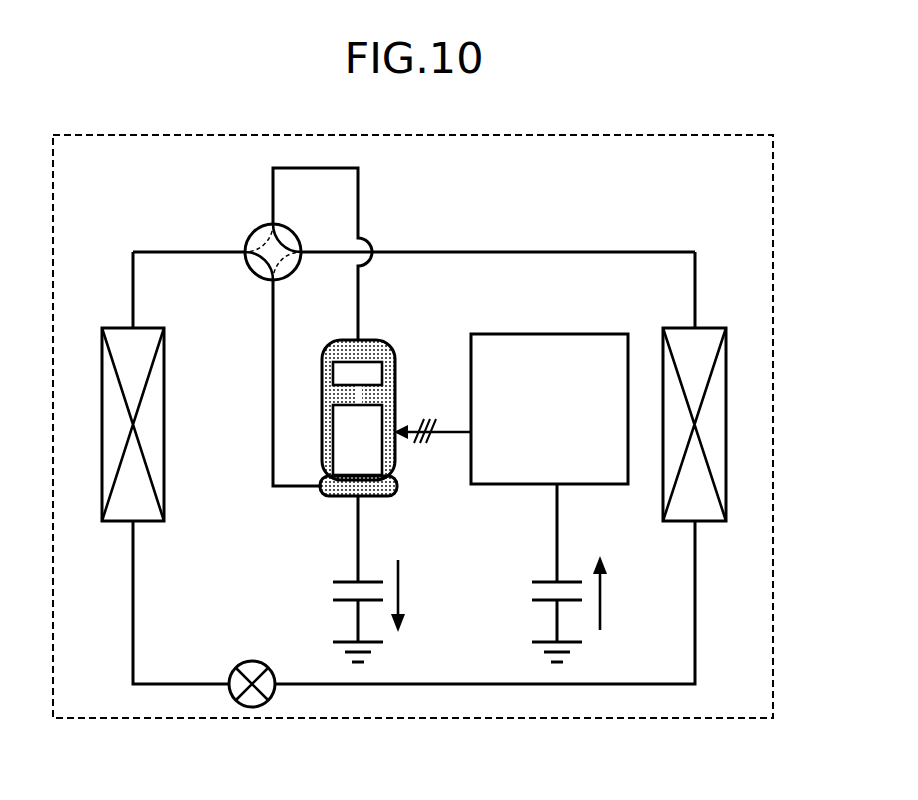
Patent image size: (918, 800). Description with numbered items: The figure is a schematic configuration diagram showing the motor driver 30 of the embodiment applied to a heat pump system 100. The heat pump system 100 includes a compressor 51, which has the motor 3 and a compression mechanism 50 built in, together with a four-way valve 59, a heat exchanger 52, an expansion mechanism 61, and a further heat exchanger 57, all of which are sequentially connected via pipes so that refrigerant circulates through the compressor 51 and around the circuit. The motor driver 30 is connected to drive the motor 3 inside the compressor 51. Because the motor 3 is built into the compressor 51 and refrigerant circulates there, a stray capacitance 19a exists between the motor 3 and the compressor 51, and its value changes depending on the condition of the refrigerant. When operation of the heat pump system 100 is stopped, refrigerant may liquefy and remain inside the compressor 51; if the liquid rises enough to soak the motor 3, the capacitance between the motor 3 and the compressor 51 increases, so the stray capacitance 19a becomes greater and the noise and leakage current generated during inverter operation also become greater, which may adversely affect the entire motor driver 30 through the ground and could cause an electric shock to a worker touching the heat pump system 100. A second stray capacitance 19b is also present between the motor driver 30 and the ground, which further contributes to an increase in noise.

The heat pump system 100 is at (722, 116).
The four-way valve 59 is at (252, 236).
The heat exchanger 52 is at (115, 328).
The heat exchanger 57 is at (712, 328).
The compressor 51 is at (375, 340).
The compression mechanism 50 is at (338, 374).
The motor 3 is at (338, 442).
The motor driver 30 is at (541, 334).
The stray capacitance 19a is at (346, 596).
The stray capacitance 19b is at (546, 596).
The expansion mechanism 61 is at (252, 707).